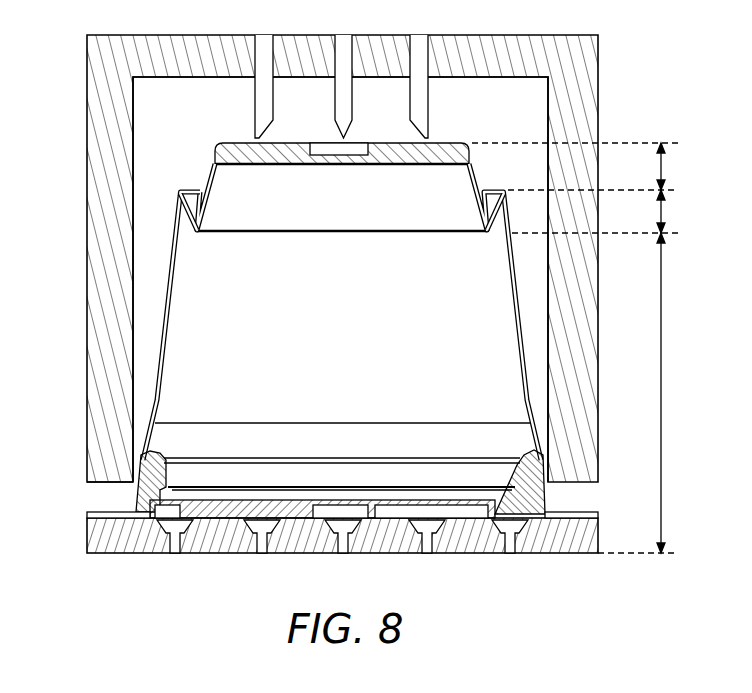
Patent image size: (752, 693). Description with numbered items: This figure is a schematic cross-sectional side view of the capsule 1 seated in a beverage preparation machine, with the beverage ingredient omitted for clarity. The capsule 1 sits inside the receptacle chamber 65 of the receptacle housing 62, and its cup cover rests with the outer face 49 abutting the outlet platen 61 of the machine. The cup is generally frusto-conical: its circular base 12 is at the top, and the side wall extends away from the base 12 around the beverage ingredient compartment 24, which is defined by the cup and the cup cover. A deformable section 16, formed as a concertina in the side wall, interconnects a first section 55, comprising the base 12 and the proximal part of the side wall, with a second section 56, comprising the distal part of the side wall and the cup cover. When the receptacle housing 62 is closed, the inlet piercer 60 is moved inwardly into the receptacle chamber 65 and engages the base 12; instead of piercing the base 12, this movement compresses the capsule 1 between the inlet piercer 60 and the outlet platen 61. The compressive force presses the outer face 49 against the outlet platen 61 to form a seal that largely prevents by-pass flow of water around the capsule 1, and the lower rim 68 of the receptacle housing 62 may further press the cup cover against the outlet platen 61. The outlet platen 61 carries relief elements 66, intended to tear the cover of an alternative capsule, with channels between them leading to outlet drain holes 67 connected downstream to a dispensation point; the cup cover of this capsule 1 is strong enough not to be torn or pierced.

The capsule 1 is at (478, 347).
The base 12 is at (250, 143).
The deformable section 16 is at (605, 211).
The beverage ingredient compartment 24 is at (205, 347).
The outer face 49 is at (129, 520).
The first section 55 is at (585, 166).
The second section 56 is at (646, 393).
The inlet piercer 60 is at (436, 106).
The outlet platen 61 is at (565, 555).
The receptacle housing 62 is at (588, 100).
The receptacle chamber 65 is at (168, 152).
The relief elements 66 is at (470, 520).
The outlet drain holes 67 is at (175, 555).
The lower rim 68 is at (93, 484).